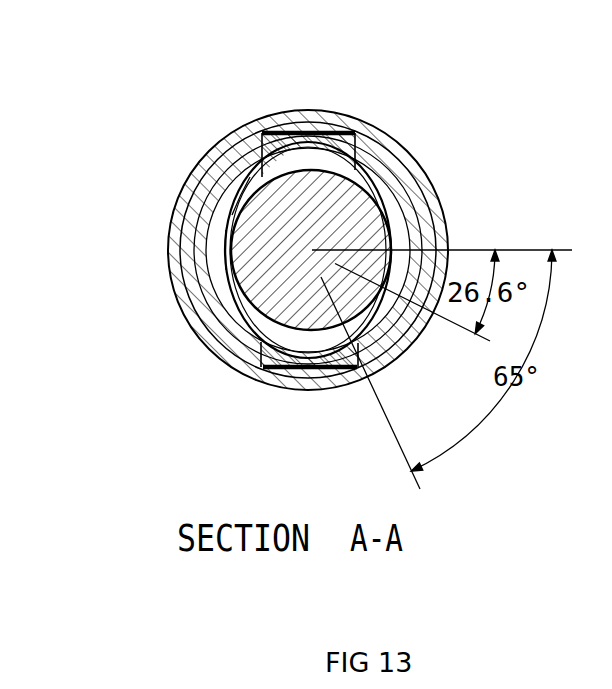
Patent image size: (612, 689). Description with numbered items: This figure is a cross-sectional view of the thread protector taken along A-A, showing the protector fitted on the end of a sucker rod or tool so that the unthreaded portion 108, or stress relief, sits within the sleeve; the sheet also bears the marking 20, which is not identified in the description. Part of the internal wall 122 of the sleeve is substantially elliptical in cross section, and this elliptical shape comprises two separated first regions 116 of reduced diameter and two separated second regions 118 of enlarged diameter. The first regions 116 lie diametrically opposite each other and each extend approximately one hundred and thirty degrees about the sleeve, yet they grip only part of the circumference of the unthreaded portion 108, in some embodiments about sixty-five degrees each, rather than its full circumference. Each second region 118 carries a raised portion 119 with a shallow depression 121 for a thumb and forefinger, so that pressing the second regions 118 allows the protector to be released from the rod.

The housing 20 is at (390, 399).
The unthreaded portion 108 is at (361, 222).
The first regions of reduced diameter 116 is at (214, 250).
The second regions of enlarged diameter 118 is at (328, 141).
The raised portion 119 is at (249, 124).
The shallow depression 121 is at (316, 122).
The internal wall 122 is at (239, 174).